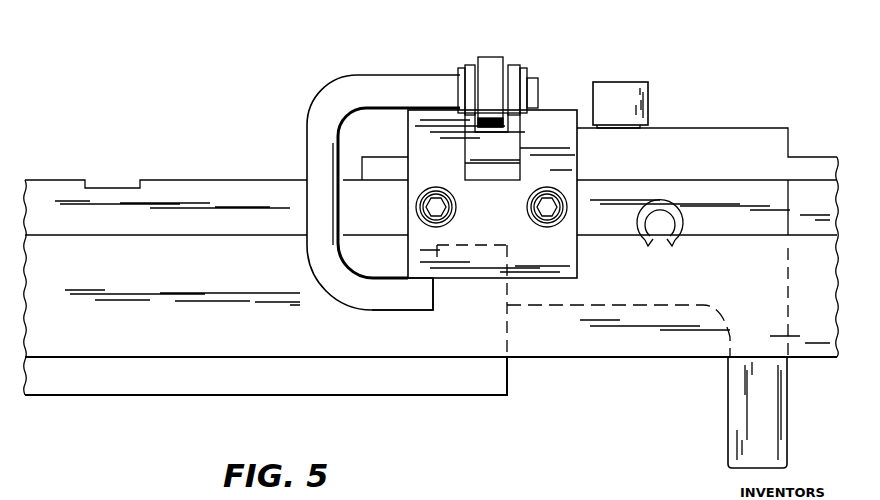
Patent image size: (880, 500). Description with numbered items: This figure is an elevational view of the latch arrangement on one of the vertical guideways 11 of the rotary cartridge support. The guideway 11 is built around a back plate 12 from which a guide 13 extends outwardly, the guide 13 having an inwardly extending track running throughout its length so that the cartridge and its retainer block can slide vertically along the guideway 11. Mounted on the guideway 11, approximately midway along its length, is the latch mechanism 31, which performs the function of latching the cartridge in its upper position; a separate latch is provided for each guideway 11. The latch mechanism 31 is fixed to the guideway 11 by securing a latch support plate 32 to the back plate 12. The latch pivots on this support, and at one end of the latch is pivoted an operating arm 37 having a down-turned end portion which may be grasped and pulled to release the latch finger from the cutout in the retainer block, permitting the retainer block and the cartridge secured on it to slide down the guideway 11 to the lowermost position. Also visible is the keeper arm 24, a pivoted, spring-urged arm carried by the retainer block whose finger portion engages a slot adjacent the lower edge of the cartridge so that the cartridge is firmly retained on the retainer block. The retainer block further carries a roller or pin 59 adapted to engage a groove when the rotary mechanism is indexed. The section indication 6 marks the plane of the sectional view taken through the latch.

The guideway 11 is at (225, 210).
The back plate 12 is at (278, 197).
The guide 13 is at (176, 340).
The keeper arm 24 is at (757, 418).
The latch mechanism 31 is at (339, 109).
The latch support plate 32 is at (552, 130).
The operating arm 37 is at (390, 293).
The pin 59 is at (617, 98).
The section line 6- 6 is at (437, 262).